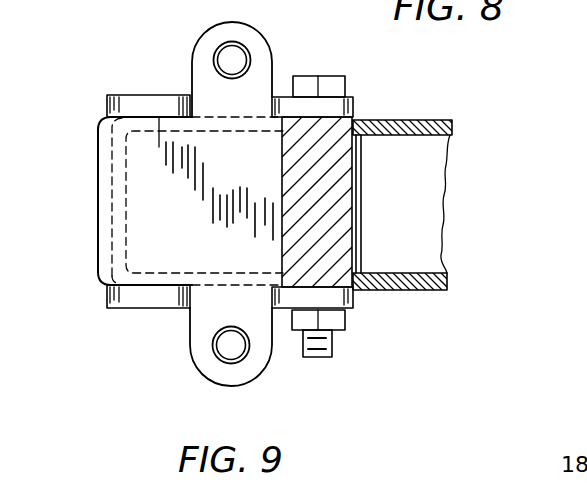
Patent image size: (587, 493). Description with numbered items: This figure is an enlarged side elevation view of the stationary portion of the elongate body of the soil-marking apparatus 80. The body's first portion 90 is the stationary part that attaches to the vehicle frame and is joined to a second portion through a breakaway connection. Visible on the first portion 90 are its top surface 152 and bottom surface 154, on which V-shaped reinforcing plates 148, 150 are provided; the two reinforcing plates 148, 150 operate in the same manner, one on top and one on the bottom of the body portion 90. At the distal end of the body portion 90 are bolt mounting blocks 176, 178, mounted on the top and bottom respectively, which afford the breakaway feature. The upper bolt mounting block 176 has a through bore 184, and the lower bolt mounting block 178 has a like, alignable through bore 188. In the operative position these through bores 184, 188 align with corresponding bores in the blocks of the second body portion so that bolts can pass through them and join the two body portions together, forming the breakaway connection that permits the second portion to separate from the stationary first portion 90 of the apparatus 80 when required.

The apparatus for marking soil 80 is at (462, 207).
The first portion of the body 90 is at (103, 183).
The V-shaped reinforcing plate 148 is at (168, 95).
The V-shaped reinforcing plate 150 is at (132, 308).
The top surface 152 is at (258, 107).
The bottom surface 154 is at (247, 287).
The bolt mounting block 176 is at (213, 28).
The bolt mounting block 178 is at (202, 373).
The through bore 184 is at (213, 51).
The through bore 188 is at (212, 347).